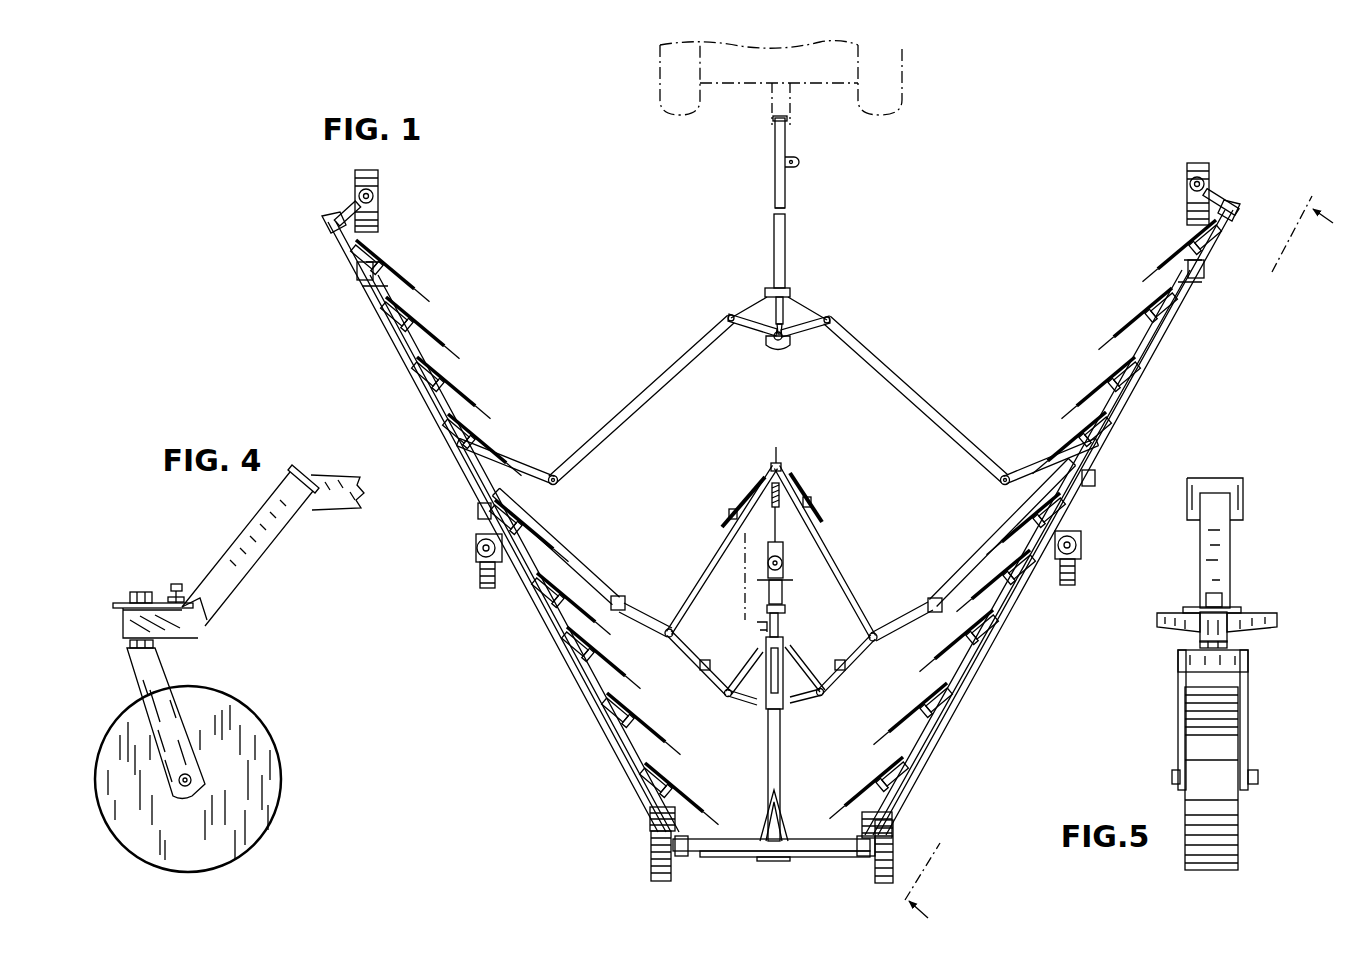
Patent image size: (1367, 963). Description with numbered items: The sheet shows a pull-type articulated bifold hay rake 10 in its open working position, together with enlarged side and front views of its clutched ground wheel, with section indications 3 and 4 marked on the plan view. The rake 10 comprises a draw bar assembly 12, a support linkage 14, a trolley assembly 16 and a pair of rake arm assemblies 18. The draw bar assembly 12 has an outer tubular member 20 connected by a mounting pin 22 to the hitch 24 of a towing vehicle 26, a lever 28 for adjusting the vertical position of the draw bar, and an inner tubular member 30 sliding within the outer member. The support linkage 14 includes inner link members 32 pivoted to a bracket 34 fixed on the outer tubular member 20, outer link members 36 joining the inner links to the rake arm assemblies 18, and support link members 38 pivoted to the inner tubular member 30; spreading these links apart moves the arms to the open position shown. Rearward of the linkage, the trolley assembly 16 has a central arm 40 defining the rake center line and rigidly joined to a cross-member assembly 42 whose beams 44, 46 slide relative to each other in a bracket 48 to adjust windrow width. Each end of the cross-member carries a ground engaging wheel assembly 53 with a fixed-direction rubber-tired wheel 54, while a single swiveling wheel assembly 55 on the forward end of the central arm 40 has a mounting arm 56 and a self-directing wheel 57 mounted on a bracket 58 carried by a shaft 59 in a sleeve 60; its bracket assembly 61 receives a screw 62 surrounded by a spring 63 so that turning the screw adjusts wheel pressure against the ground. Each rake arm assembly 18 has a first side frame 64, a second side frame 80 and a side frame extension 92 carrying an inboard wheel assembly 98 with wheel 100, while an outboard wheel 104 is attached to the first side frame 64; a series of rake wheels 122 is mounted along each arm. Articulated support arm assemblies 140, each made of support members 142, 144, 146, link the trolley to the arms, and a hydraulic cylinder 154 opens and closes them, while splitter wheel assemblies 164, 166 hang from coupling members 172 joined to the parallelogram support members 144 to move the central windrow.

In FIG. 1, the bifold hay rake 10 is at (934, 322).
In FIG. 1, the draw bar assembly 12 is at (792, 243).
In FIG. 1, the support linkage 14 is at (842, 318).
In FIG. 1, the trolley assembly 16 is at (789, 795).
In FIG. 1, the rake arm assemblies 18 is at (549, 633).
In FIG. 1, the outer tubular member 20 is at (784, 200).
In FIG. 1, the mounting pin 22 is at (784, 126).
In FIG. 1, the hitch 24 is at (785, 100).
In FIG. 1, the towing vehicle 26 is at (888, 86).
In FIG. 1, the lever 28 is at (802, 162).
In FIG. 1, the inner tubular member 30 is at (792, 319).
In FIG. 1, the inner link members 32 is at (655, 391).
In FIG. 1, the bracket 34 is at (781, 289).
In FIG. 1, the outer link members 36 is at (526, 466).
In FIG. 1, the support link members 38 is at (789, 350).
In FIG. 1, the central arm 40 is at (768, 743).
In FIG. 4, the central arm 40 is at (361, 477).
In FIG. 5, the central arm 40 is at (1243, 508).
In FIG. 1, the cross-member assembly 42 is at (746, 862).
In FIG. 1, the beam 44 is at (806, 840).
In FIG. 1, the beam 46 is at (849, 860).
In FIG. 1, the bracket 48 is at (779, 864).
In FIG. 1, the ground engaging wheel assembly 53 is at (649, 821).
In FIG. 1, the rubber-tired wheel 54 is at (650, 855).
In FIG. 4, the ground engaging wheel assembly 55 is at (256, 606).
In FIG. 5, the ground engaging wheel assembly 55 is at (1292, 622).
In FIG. 4, the mounting arm 56 is at (276, 533).
In FIG. 5, the mounting arm 56 is at (1222, 573).
In FIG. 1, the rubber-tired wheel 57 is at (786, 553).
In FIG. 4, the rubber-tired wheel 57 is at (253, 813).
In FIG. 5, the rubber-tired wheel 57 is at (1229, 819).
In FIG. 4, the bracket 58 is at (186, 711).
In FIG. 5, the bracket 58 is at (1249, 704).
In FIG. 4, the shaft 59 is at (156, 646).
In FIG. 5, the shaft 59 is at (1233, 646).
In FIG. 4, the sleeve 60 is at (137, 603).
In FIG. 5, the sleeve 60 is at (1211, 633).
In FIG. 4, the bracket assembly 61 is at (152, 594).
In FIG. 5, the bracket assembly 61 is at (1234, 608).
In FIG. 4, the screw 62 is at (183, 589).
In FIG. 5, the screw 62 is at (1208, 596).
In FIG. 4, the spring 63 is at (200, 601).
In FIG. 1, the first side frame 64 is at (611, 745).
In FIG. 1, the second side frame 80 is at (478, 513).
In FIG. 1, the side frame extension 92 is at (345, 264).
In FIG. 1, the ground engaging wheel assembly 98 is at (344, 182).
In FIG. 1, the rubber-tired wheel 100 is at (378, 205).
In FIG. 1, the rubber-tired wheel 104 is at (478, 586).
In FIG. 1, the rake wheels 122 is at (405, 274).
In FIG. 1, the support arm assemblies 140 is at (603, 581).
In FIG. 1, the support member 142 is at (826, 675).
In FIG. 1, the parallelogram support member 144 is at (656, 626).
In FIG. 1, the support member 146 is at (573, 566).
In FIG. 1, the hydraulic cylinder 154 is at (783, 704).
In FIG. 1, the splitter wheel assembly 164 is at (823, 495).
In FIG. 1, the splitter wheel assembly 166 is at (732, 495).
In FIG. 1, the coupling member 172 is at (711, 568).
In FIG. 1, the section line 3- 3 is at (1103, 548).
In FIG. 1, the section line 4- 4 is at (742, 545).